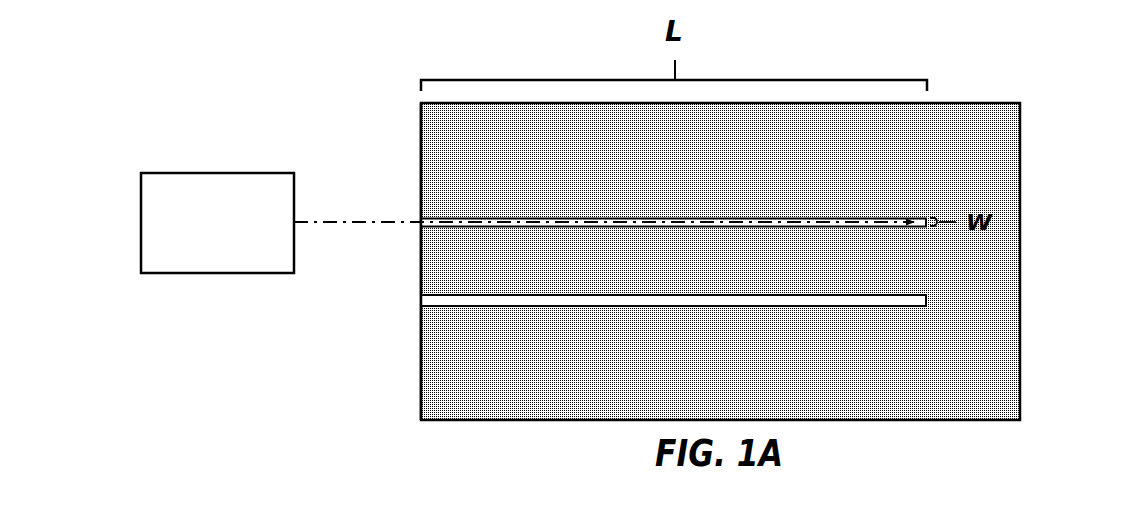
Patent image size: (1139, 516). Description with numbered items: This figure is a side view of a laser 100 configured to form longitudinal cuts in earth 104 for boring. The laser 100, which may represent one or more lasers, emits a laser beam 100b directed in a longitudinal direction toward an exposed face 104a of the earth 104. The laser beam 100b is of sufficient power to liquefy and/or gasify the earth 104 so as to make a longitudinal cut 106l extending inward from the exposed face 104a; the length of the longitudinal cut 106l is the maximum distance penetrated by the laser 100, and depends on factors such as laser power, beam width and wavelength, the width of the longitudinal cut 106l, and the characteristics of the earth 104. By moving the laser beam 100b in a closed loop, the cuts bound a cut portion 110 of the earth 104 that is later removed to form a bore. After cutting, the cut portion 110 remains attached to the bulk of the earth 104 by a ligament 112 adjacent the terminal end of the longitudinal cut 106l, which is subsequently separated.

The laser 100 is at (234, 232).
The laser beam 100b is at (333, 219).
The earth 104 is at (989, 400).
The exposed face 104a is at (411, 162).
The longitudinal cut 106l is at (910, 213).
The cut portion 110 is at (688, 271).
The ligament 112 is at (929, 253).